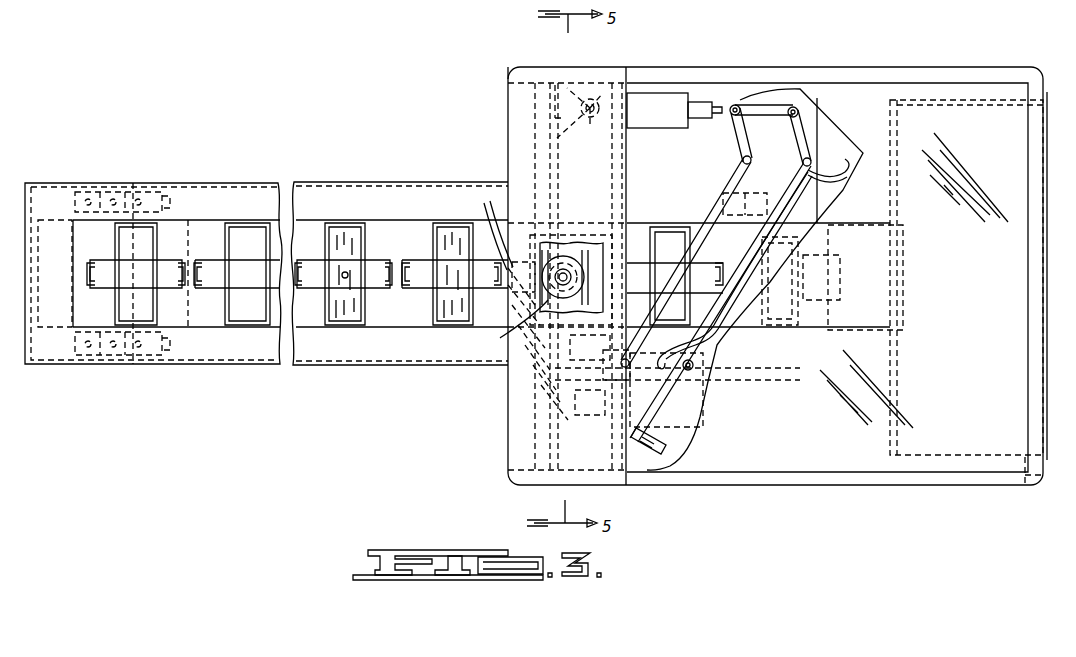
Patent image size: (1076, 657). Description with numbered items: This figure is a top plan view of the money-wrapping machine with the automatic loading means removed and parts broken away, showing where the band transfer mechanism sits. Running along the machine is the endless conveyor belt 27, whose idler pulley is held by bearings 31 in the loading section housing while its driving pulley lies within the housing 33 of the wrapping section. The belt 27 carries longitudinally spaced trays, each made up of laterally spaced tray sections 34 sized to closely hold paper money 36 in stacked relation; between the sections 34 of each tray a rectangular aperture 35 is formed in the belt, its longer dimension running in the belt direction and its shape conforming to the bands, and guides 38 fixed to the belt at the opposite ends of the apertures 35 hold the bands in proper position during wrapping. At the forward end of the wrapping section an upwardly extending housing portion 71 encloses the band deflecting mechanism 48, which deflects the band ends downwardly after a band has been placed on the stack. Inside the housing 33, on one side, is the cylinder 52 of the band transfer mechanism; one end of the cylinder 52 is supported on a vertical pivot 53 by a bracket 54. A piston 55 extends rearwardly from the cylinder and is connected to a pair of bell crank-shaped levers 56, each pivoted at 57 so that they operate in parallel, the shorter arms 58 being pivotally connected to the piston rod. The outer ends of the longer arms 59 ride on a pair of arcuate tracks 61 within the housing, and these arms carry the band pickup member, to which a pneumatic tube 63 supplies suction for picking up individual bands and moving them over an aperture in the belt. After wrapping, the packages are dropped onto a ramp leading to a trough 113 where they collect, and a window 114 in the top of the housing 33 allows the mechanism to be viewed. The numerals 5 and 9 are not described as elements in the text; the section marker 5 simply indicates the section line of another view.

The section line 5 is at (43, 275).
The frame member 9 is at (32, 346).
The endless conveyor belt 27 is at (404, 236).
The bearings 31 is at (130, 367).
The housing 33 is at (905, 73).
The tray sections 34 is at (148, 235).
The rectangular aperture 35 is at (165, 260).
The paper money 36 is at (342, 238).
The guides 38 is at (90, 267).
The band deflecting mechanism 48 is at (540, 303).
The cylinder 52 is at (645, 98).
The vertical pivot 53 is at (587, 133).
The bracket 54 is at (573, 103).
The piston 55 is at (702, 105).
The bell crank-shaped levers 56 is at (708, 191).
The pivot 57 is at (750, 158).
The shorter arms 58 is at (798, 130).
The longer arms 59 is at (745, 182).
The arcuate tracks 61 is at (636, 402).
The pneumatic tube 63 is at (717, 338).
The housing portion 71 is at (522, 421).
The trough 113 is at (950, 457).
The window 114 is at (817, 455).